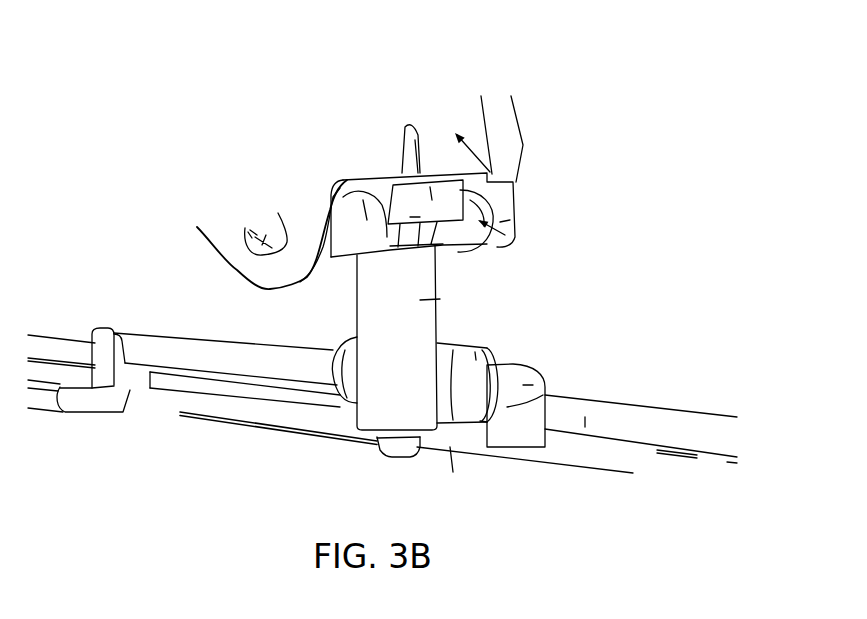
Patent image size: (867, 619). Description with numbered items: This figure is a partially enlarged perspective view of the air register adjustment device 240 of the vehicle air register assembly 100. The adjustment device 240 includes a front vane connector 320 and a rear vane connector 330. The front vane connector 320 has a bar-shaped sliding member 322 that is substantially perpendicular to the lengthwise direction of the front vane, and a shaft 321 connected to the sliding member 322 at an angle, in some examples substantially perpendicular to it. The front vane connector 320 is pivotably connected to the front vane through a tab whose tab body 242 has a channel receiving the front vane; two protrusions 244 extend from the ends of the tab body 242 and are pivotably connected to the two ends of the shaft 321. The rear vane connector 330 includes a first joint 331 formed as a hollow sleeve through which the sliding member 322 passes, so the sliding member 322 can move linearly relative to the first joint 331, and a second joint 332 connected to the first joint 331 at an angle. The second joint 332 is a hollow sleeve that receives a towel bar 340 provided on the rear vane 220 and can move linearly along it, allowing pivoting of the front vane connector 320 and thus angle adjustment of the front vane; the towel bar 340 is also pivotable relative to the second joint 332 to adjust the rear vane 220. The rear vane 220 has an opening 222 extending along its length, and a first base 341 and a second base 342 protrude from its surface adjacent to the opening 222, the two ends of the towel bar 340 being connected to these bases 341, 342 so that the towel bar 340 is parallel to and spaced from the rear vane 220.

The air register assembly 100 is at (665, 63).
The rear vane 220 is at (592, 452).
The opening 222 is at (255, 437).
The air register adjustment device 240 is at (165, 311).
The tab body 242 is at (475, 121).
The protrusions 244 is at (288, 203).
The front vane connector 320 is at (502, 208).
The shaft 321 is at (262, 225).
The sliding member 322 is at (380, 438).
The rear vane connector 330 is at (442, 333).
The first joint 331 is at (420, 300).
The second joint 332 is at (493, 347).
The towel bar 340 is at (238, 355).
The first base 341 is at (127, 372).
The second base 342 is at (546, 386).